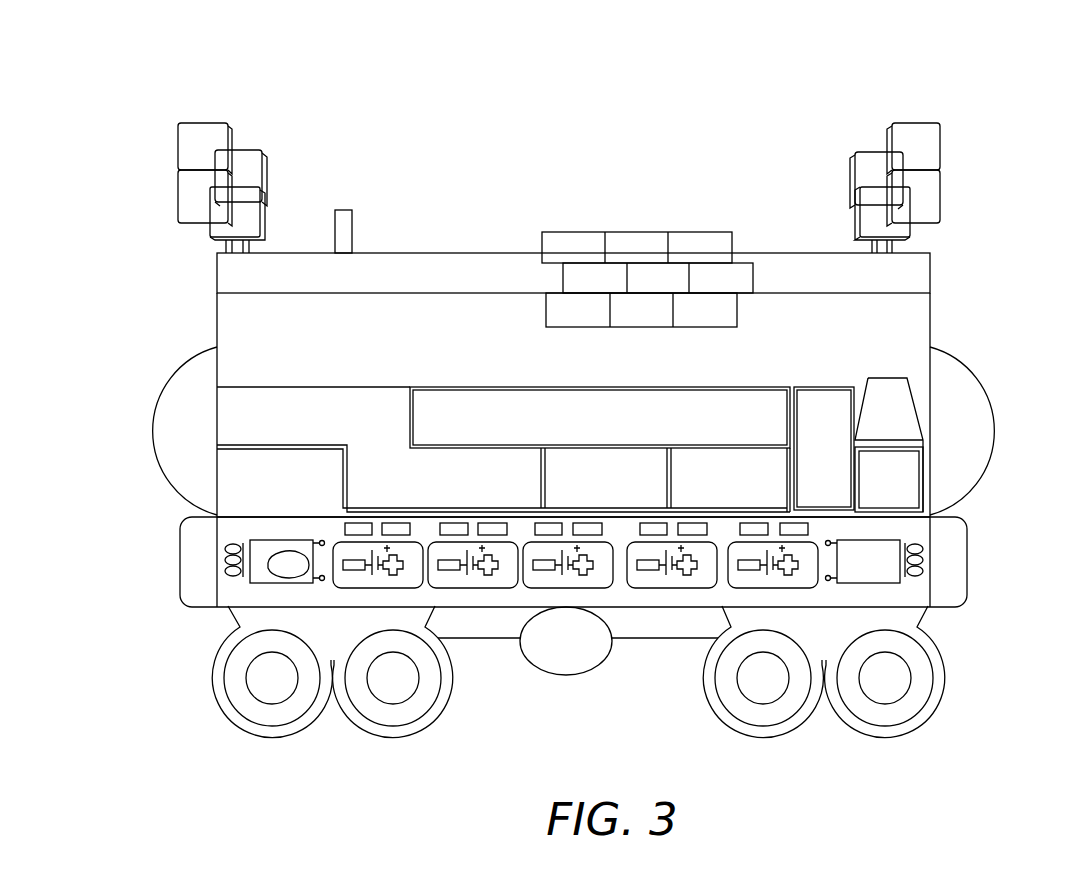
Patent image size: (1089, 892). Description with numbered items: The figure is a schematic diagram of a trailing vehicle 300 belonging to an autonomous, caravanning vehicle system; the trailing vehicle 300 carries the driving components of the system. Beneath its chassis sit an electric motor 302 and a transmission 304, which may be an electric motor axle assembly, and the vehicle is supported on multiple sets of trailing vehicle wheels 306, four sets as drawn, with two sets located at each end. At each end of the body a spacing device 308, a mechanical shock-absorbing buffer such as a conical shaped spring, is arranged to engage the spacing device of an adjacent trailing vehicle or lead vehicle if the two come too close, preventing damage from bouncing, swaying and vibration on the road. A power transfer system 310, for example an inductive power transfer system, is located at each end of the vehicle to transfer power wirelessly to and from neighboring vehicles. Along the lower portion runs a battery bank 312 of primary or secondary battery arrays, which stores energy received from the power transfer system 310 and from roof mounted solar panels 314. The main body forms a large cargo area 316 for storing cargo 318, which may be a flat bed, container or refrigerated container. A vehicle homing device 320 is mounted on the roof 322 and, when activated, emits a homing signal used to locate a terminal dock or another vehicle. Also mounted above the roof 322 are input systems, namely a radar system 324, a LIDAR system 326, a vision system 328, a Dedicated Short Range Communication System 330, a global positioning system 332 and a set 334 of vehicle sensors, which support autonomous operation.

The trailing vehicle 300 is at (90, 72).
The electric motor 302 is at (566, 676).
The transmission 304 is at (478, 640).
The trailing vehicle wheels 306 is at (907, 722).
The spacing device 308 is at (988, 400).
The power transfer system 310 is at (243, 565).
The battery bank 312 is at (650, 578).
The solar panels 314 is at (632, 240).
The cargo area 316 is at (907, 313).
The cargo 318 is at (390, 387).
The vehicle homing device 320 is at (343, 210).
The roof 322 is at (403, 253).
The radar system 324 is at (265, 233).
The LIDAR system 326 is at (945, 193).
The vision system 328 is at (178, 202).
The Dedicated Short Range Communication System 330 is at (850, 160).
The global positioning system 332 is at (207, 123).
The set of vehicle sensors 334 is at (255, 150).